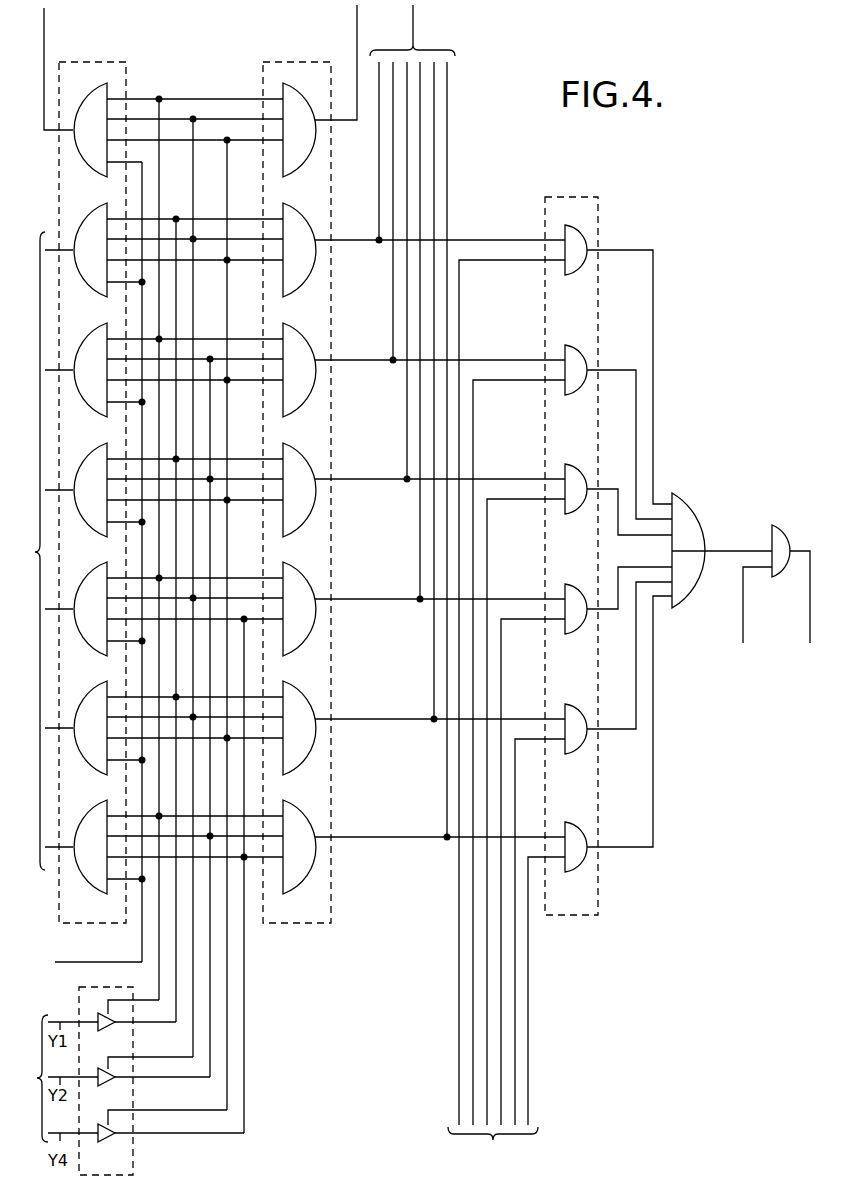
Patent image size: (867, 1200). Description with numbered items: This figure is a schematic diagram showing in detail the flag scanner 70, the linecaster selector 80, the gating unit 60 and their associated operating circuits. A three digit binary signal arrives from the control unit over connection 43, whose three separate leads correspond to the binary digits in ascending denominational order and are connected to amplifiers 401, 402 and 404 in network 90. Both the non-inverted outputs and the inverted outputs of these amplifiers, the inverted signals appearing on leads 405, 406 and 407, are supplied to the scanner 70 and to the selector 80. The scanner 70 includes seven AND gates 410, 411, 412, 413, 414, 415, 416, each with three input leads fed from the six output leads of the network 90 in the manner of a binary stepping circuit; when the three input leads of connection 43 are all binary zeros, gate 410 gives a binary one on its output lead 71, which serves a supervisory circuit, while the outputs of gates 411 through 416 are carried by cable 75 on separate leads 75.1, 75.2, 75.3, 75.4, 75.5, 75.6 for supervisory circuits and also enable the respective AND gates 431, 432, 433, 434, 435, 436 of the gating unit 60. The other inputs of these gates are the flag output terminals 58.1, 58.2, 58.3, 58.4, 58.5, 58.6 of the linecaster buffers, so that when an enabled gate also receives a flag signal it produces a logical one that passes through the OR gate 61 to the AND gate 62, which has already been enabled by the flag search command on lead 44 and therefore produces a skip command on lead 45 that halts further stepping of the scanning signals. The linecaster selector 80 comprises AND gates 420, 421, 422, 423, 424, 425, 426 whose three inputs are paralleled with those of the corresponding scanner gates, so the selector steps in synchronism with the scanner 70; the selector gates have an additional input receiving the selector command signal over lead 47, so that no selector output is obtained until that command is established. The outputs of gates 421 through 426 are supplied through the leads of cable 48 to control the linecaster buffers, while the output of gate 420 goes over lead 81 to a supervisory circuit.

The linecaster selector 80 is at (117, 58).
The flag scanner 70 is at (308, 58).
The gating unit 60 is at (576, 196).
The network 90 is at (133, 1148).
The lead 81 is at (46, 48).
The cable 48 is at (35, 552).
The lead 47 is at (88, 962).
The connection 43 is at (37, 1078).
The output lead 71 is at (357, 21).
The cable 75 is at (413, 21).
The lead 75.1 is at (379, 223).
The lead 75.2 is at (393, 192).
The lead 75.3 is at (407, 157).
The lead 75.4 is at (420, 215).
The lead 75.5 is at (434, 188).
The lead 75.6 is at (436, 162).
The flag output terminal 58.1 is at (459, 313).
The flag output terminal 58.2 is at (473, 431).
The flag output terminal 58.3 is at (487, 557).
The flag output terminal 58.4 is at (501, 703).
The flag output terminal 58.5 is at (515, 798).
The flag output terminal 58.6 is at (528, 960).
The AND gate 420 is at (92, 164).
The AND gate 421 is at (92, 284).
The AND gate 422 is at (92, 404).
The AND gate 423 is at (92, 524).
The AND gate 424 is at (92, 643).
The AND gate 425 is at (92, 762).
The AND gate 426 is at (92, 881).
The AND gate 410 is at (297, 161).
The AND gate 411 is at (297, 281).
The AND gate 412 is at (297, 401).
The AND gate 413 is at (297, 521).
The AND gate 414 is at (297, 640).
The AND gate 415 is at (297, 759).
The AND gate 416 is at (297, 878).
The AND gate 431 is at (572, 276).
The AND gate 432 is at (572, 396).
The AND gate 433 is at (571, 515).
The AND gate 434 is at (572, 635).
The AND gate 435 is at (572, 755).
The AND gate 436 is at (572, 873).
The OR gate 61 is at (688, 515).
The AND gate 62 is at (778, 525).
The lead 44 is at (743, 634).
The lead 45 is at (810, 634).
The amplifier 401 is at (104, 1019).
The amplifier 402 is at (104, 1074).
The amplifier 404 is at (104, 1130).
The lead 405 is at (157, 975).
The lead 406 is at (158, 1057).
The lead 407 is at (160, 1109).